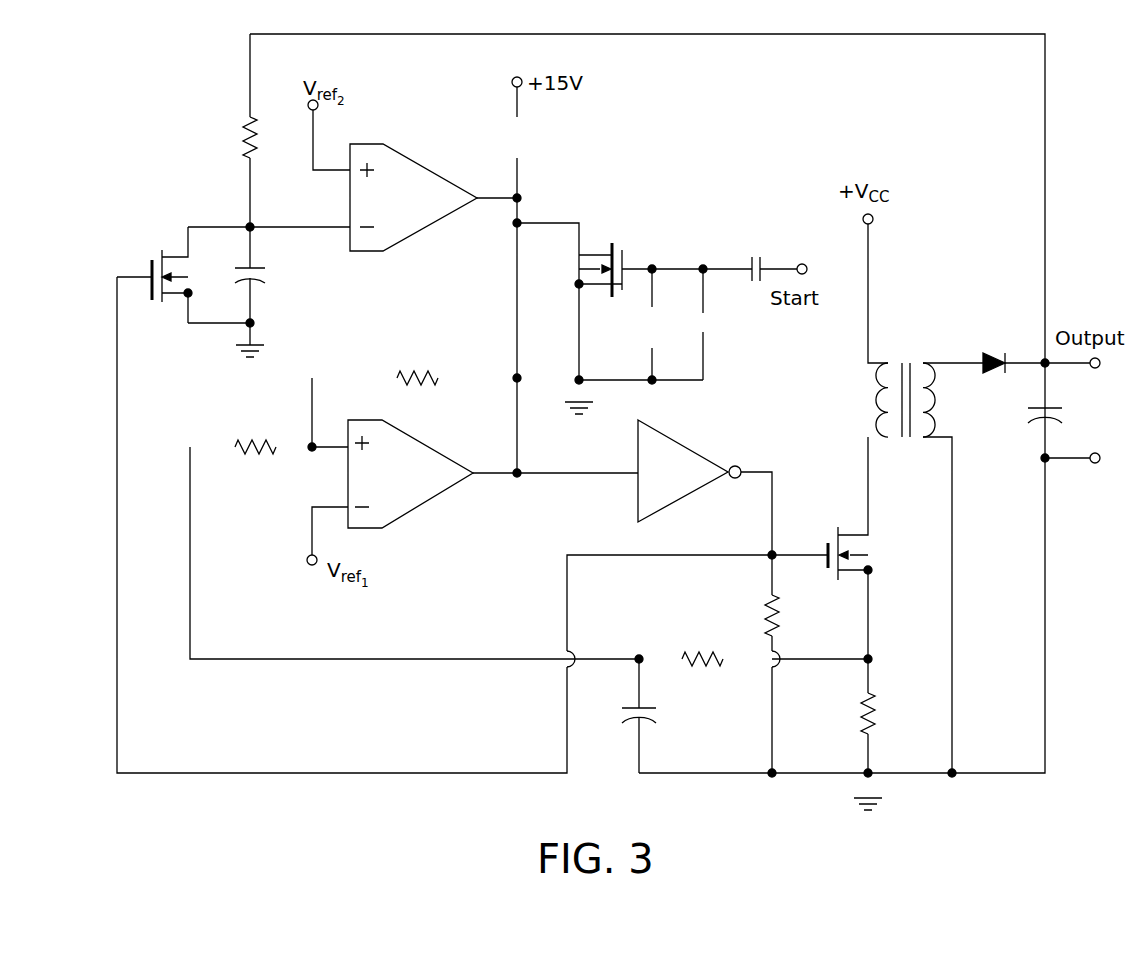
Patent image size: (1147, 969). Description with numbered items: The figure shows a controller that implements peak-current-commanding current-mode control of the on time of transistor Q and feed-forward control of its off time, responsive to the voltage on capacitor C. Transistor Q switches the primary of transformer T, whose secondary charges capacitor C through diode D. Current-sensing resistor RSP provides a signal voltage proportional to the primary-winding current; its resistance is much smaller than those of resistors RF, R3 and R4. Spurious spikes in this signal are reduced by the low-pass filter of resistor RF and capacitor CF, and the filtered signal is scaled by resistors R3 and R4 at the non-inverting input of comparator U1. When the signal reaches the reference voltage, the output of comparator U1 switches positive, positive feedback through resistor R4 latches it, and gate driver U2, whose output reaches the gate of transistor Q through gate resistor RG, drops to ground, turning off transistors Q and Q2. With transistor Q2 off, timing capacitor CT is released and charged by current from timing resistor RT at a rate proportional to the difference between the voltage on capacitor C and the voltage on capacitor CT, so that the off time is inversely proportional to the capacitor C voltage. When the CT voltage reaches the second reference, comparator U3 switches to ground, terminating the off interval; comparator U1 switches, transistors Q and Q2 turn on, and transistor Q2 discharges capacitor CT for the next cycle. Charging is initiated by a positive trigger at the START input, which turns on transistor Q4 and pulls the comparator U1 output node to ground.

The timing resistor RT is at (230, 137).
The timing capacitor CT is at (268, 276).
The transistor Q2 is at (170, 275).
The comparator U3 is at (413, 197).
The transistor Q4 is at (578, 270).
The resistor R4 is at (417, 364).
The resistor R3 is at (255, 433).
The comparator U1 is at (410, 474).
The gate driver U2 is at (689, 471).
The transistor Q is at (861, 553).
The gate resistor RG is at (788, 615).
The resistor RF is at (702, 644).
The capacitor CF is at (656, 716).
The current-sensing resistor RSP is at (886, 713).
The transformer T is at (905, 371).
The diode D is at (994, 347).
The capacitor C is at (1057, 415).